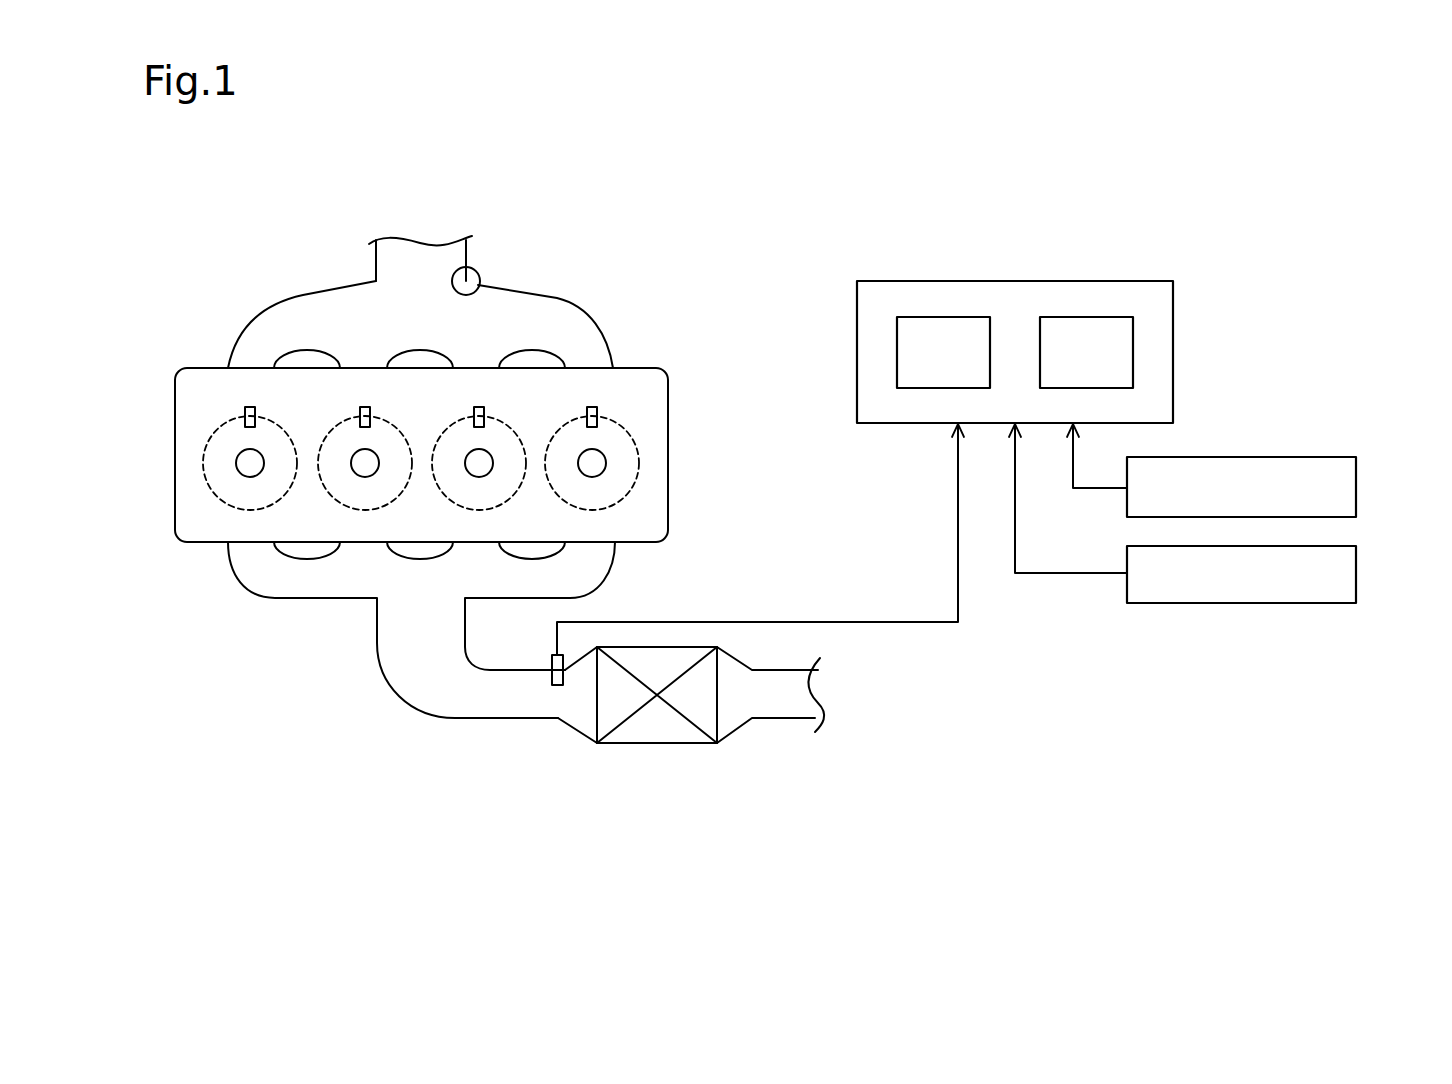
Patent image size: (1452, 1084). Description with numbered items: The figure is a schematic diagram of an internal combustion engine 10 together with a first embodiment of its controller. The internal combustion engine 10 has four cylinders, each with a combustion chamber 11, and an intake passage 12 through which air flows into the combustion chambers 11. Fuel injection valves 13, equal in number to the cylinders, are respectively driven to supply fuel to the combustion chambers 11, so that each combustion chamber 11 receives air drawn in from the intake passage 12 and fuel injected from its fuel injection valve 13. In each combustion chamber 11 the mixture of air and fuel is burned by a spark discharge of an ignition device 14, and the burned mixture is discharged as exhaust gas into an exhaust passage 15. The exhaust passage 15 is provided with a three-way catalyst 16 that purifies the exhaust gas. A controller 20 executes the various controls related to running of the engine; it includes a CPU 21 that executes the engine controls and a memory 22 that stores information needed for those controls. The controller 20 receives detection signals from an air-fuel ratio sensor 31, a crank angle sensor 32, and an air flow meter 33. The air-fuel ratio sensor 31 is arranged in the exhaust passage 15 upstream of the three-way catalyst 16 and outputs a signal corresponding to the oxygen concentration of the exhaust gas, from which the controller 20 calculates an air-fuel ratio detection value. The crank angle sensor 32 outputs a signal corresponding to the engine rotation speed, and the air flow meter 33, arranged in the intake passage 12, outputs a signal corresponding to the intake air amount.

The internal combustion engine 10 is at (615, 235).
The combustion chamber 11 is at (232, 452).
The intake passage 12 is at (473, 268).
The fuel injection valve 13 is at (250, 405).
The ignition device 14 is at (250, 477).
The exhaust passage 15 is at (595, 573).
The three-way catalyst 16 is at (653, 733).
The controller 20 is at (1152, 281).
The CPU 21 is at (943, 352).
The memory 22 is at (1086, 352).
The air-fuel ratio sensor 31 is at (553, 652).
The crank angle sensor 32 is at (1360, 490).
The air flow meter 33 is at (1360, 578).